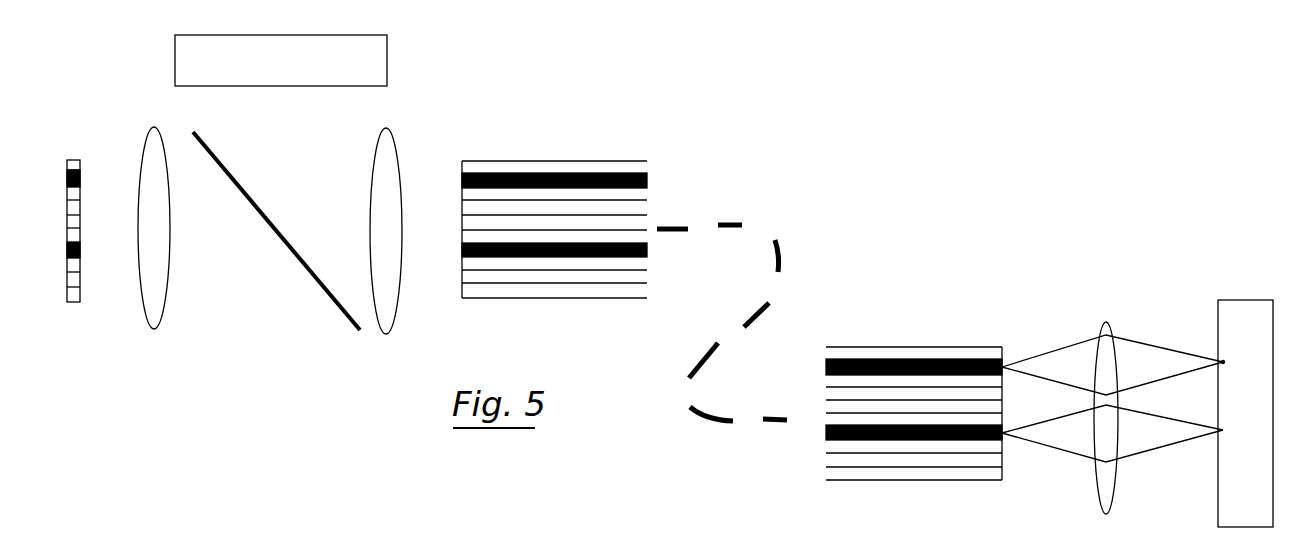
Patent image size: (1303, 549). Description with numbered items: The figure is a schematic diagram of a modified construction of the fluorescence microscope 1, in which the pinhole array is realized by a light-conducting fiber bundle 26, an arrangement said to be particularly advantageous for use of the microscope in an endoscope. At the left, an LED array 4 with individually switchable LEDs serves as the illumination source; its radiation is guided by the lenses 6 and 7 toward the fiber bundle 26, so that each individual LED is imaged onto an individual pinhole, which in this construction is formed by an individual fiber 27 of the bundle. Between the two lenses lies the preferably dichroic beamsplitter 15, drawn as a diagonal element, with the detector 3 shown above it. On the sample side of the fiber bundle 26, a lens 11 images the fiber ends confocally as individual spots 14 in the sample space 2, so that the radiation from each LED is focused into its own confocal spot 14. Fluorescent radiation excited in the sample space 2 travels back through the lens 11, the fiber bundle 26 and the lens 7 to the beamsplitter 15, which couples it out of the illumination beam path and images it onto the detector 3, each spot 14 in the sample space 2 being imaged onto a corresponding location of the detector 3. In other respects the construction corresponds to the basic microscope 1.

The microscope 1 is at (1010, 203).
The sample space 2 is at (1227, 322).
The detector 3 is at (384, 52).
The LED array 4 is at (73, 159).
The lens 6 is at (156, 326).
The lens 7 is at (394, 150).
The lens 11 is at (1105, 480).
The spot 14 is at (1224, 360).
The dichroic beamsplitter 15 is at (324, 294).
The light-conducting fiber bundle 26 is at (770, 178).
The fiber 27 is at (587, 168).